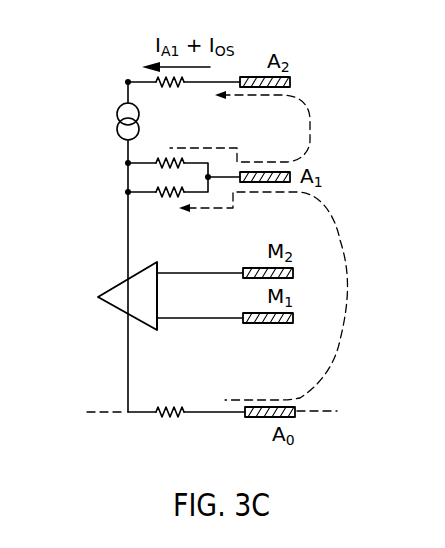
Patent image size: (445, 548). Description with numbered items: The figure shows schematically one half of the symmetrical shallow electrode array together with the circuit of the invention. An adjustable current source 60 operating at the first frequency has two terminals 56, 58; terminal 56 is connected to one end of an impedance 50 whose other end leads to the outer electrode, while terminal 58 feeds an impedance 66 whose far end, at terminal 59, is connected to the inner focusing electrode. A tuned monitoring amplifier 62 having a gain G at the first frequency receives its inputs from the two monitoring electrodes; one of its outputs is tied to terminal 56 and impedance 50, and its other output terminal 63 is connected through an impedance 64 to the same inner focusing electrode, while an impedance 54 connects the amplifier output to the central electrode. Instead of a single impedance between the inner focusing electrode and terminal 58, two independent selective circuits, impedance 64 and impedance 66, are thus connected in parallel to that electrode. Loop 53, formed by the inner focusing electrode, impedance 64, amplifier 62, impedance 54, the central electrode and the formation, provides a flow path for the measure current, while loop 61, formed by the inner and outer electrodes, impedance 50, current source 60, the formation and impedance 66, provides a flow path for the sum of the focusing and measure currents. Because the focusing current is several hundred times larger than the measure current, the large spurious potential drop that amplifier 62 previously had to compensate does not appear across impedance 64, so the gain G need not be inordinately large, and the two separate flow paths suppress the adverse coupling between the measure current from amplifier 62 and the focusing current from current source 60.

The impedance 50 is at (180, 88).
The loop 53 is at (345, 280).
The impedance 54 is at (166, 407).
The terminal 56 is at (126, 82).
The terminal 58 is at (127, 163).
The terminal 59 is at (208, 176).
The adjustable current source 60 is at (116, 115).
The loop 61 is at (307, 114).
The tuned monitoring amplifier 62 is at (112, 290).
The output terminal 63 is at (127, 192).
The impedance 64 is at (180, 197).
The impedance 66 is at (164, 159).